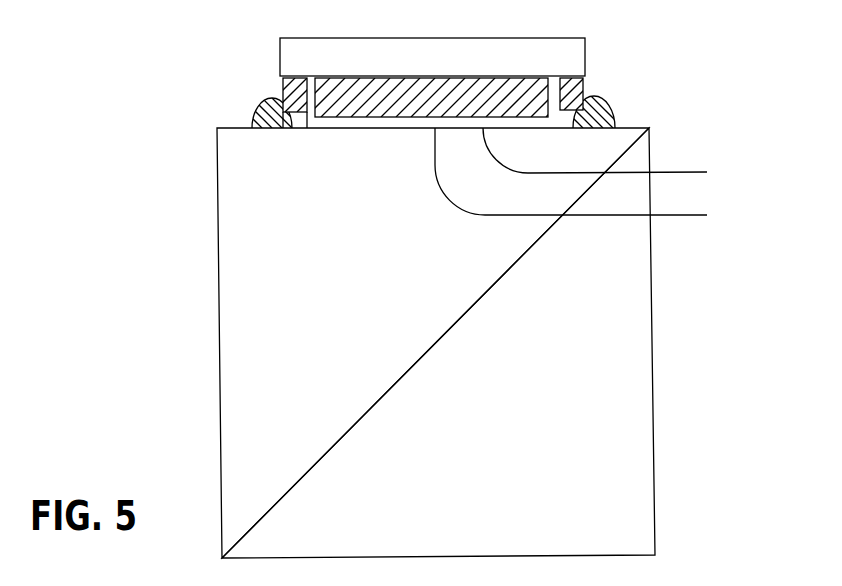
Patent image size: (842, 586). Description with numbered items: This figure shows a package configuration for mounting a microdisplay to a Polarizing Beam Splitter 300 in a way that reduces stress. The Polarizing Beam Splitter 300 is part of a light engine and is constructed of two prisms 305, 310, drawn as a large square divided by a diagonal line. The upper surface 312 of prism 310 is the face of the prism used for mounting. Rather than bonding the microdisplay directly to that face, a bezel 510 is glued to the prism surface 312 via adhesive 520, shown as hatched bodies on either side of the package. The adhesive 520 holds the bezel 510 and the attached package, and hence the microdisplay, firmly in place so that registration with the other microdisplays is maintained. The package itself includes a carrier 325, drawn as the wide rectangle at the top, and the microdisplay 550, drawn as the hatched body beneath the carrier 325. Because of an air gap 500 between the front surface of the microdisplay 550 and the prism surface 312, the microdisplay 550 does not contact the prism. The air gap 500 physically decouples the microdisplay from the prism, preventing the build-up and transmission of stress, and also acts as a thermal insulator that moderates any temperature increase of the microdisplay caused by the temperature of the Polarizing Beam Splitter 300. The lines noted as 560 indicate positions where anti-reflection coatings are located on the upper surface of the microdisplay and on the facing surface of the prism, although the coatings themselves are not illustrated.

The Polarizing Beam Splitter 300 is at (204, 389).
The prism 305 is at (593, 530).
The prism 310 is at (280, 459).
The upper surface of prism 312 is at (299, 129).
The carrier 325 is at (560, 70).
The air gap 500 is at (595, 177).
The bezel 510 is at (282, 93).
The adhesive 520 is at (255, 116).
The microdisplay 550 is at (619, 155).
The anti-reflection coating positions 560 is at (330, 118).